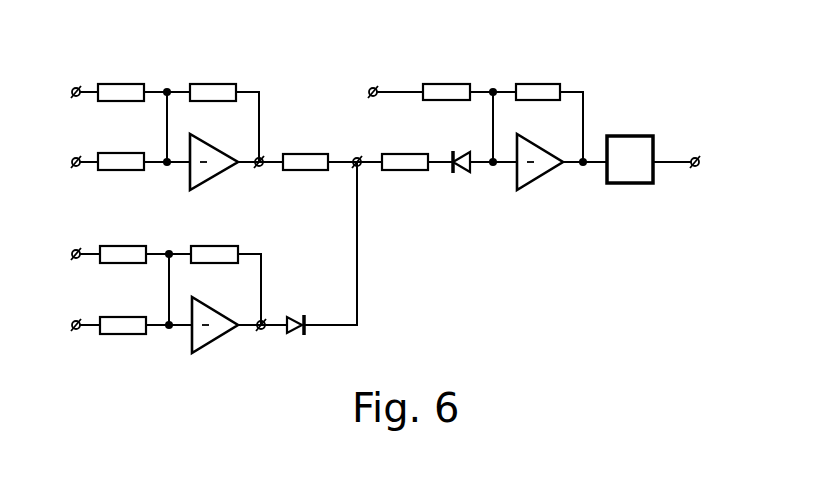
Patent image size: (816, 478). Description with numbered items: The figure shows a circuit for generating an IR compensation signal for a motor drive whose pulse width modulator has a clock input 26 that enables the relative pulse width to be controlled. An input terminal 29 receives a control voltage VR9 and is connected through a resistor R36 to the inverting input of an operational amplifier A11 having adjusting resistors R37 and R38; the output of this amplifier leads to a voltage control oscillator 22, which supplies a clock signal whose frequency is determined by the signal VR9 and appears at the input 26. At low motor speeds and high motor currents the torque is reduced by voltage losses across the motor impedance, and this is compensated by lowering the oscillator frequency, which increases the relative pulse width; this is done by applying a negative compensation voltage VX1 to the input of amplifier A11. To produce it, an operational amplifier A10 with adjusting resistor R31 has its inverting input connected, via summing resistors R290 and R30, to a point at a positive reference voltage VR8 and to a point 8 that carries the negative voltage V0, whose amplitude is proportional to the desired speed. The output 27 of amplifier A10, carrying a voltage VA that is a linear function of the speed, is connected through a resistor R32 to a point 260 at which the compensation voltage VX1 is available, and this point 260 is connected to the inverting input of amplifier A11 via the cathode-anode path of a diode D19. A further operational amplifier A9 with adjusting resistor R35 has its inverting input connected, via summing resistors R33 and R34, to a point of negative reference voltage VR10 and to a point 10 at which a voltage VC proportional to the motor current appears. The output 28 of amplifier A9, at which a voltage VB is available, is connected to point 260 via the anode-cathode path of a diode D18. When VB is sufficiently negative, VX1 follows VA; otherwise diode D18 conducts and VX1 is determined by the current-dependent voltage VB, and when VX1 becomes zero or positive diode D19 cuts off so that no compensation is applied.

The point 8 is at (76, 168).
The point 10 is at (76, 331).
The voltage control oscillator 22 is at (630, 136).
The input 26 is at (696, 156).
The output 27 is at (257, 157).
The output 28 is at (264, 318).
The input terminal 29 is at (368, 92).
The point 260 is at (356, 156).
The summing resistor R290 is at (116, 84).
The summing resistor R30 is at (113, 153).
The adjusting resistor R31 is at (208, 84).
The resistor R32 is at (303, 154).
The summing resistor R33 is at (116, 246).
The summing resistor R34 is at (113, 317).
The adjusting resistor R35 is at (203, 246).
The resistor R36 is at (402, 154).
The adjusting resistor R37 is at (445, 84).
The adjusting resistor R38 is at (531, 84).
The operational amplifier A9 is at (223, 340).
The operational amplifier A10 is at (221, 176).
The operational amplifier A11 is at (541, 176).
The diode D18 is at (295, 334).
The diode D19 is at (464, 173).
The positive reference voltage VR8 is at (71, 92).
The negative voltage V0 is at (45, 166).
The negative reference voltage VR10 is at (71, 254).
The voltage VC is at (45, 331).
The voltage VA is at (260, 168).
The voltage VB is at (262, 332).
The compensation voltage VX1 is at (359, 168).
The control voltage VR9 is at (370, 86).